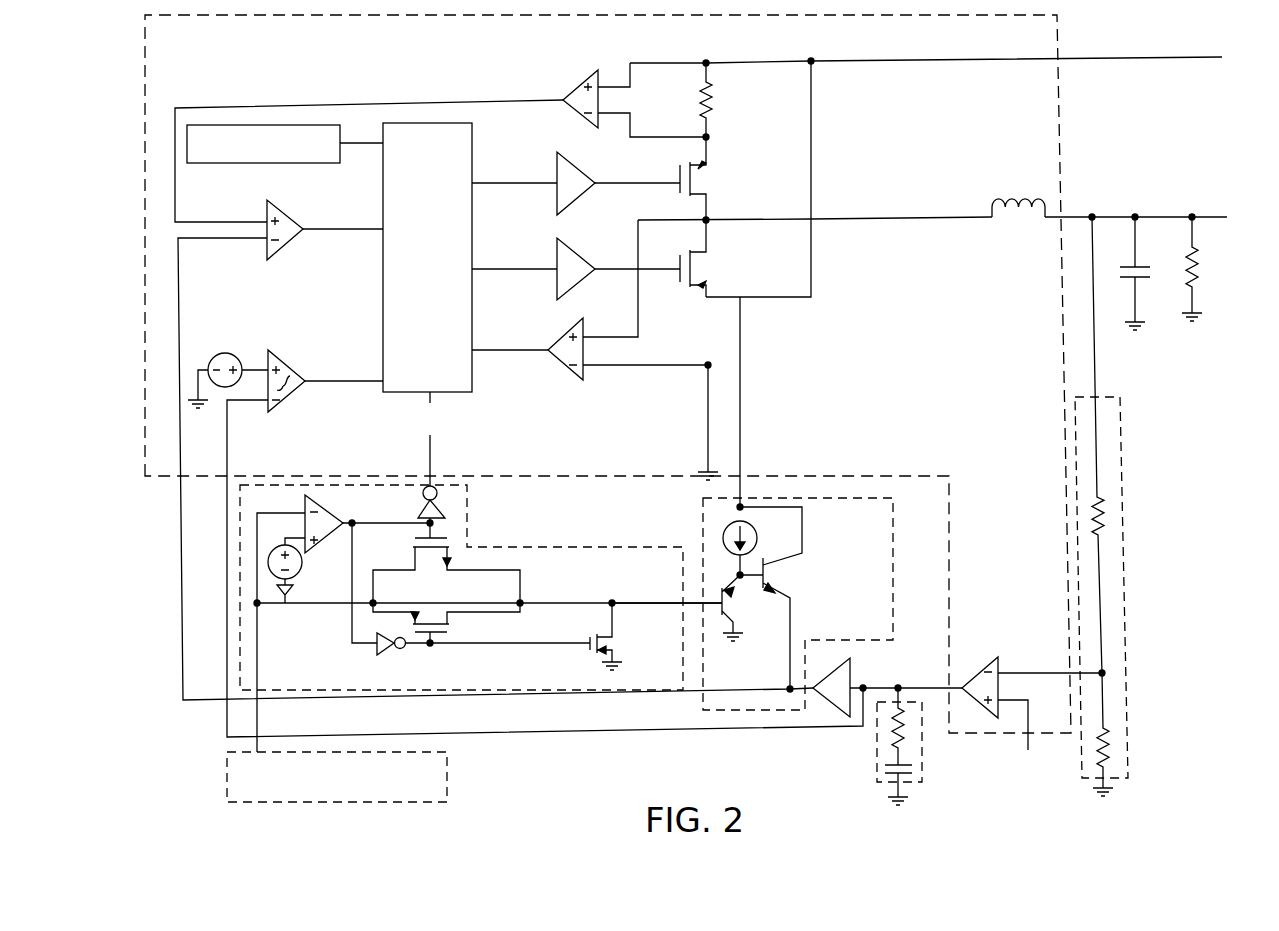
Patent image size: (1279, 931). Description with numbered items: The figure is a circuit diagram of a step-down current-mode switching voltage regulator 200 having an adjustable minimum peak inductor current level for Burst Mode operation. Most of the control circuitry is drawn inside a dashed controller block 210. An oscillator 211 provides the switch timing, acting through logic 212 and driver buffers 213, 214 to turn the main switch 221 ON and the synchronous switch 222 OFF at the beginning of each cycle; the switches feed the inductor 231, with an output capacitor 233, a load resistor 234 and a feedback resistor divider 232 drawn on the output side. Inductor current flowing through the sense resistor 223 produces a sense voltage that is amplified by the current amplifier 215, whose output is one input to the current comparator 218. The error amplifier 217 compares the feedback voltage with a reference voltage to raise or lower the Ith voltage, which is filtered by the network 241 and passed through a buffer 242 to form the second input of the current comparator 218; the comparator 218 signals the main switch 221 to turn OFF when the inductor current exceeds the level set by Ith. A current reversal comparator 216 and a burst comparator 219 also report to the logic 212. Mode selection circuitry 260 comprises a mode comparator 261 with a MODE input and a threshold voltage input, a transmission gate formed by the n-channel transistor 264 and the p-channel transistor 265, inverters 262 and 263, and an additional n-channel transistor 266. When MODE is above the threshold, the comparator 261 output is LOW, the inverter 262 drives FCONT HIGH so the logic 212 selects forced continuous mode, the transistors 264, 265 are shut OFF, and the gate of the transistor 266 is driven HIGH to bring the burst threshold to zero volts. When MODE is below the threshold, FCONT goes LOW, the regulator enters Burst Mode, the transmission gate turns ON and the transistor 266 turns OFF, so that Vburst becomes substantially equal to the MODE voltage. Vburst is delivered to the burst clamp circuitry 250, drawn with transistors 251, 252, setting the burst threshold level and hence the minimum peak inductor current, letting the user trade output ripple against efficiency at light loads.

The switching regulator 200 is at (640, 786).
The controller integrated circuit 210 is at (1057, 150).
The oscillator 211 is at (240, 124).
The logic 212 is at (405, 123).
The driver buffer 213 is at (573, 162).
The driver buffer 214 is at (560, 255).
The current amplifier 215 is at (567, 117).
The current reversal comparator 216 is at (565, 335).
The error amplifier 217 is at (965, 697).
The current comparator 218 is at (297, 237).
The burst comparator 219 is at (287, 364).
The main switch 221 is at (693, 177).
The synchronous switch 222 is at (697, 262).
The resistor 223 is at (712, 100).
The inductor 231 is at (993, 205).
The feedback resistor divider 232 is at (1122, 513).
The output capacitor 233 is at (1140, 280).
The load resistor 234 is at (1197, 285).
The compensation network 241 is at (877, 772).
The buffer 242 is at (820, 700).
The burst clamp circuitry 250 is at (752, 563).
The transistor 251 is at (733, 600).
The transistor 252 is at (768, 575).
The mode selection circuitry 260 is at (481, 618).
The mode comparator 261 is at (330, 506).
The inverter 262 is at (448, 507).
The inverter 263 is at (377, 648).
The n-channel transistor 264 is at (438, 548).
The p-channel transistor 265 is at (438, 617).
The n-channel transistor 266 is at (600, 644).